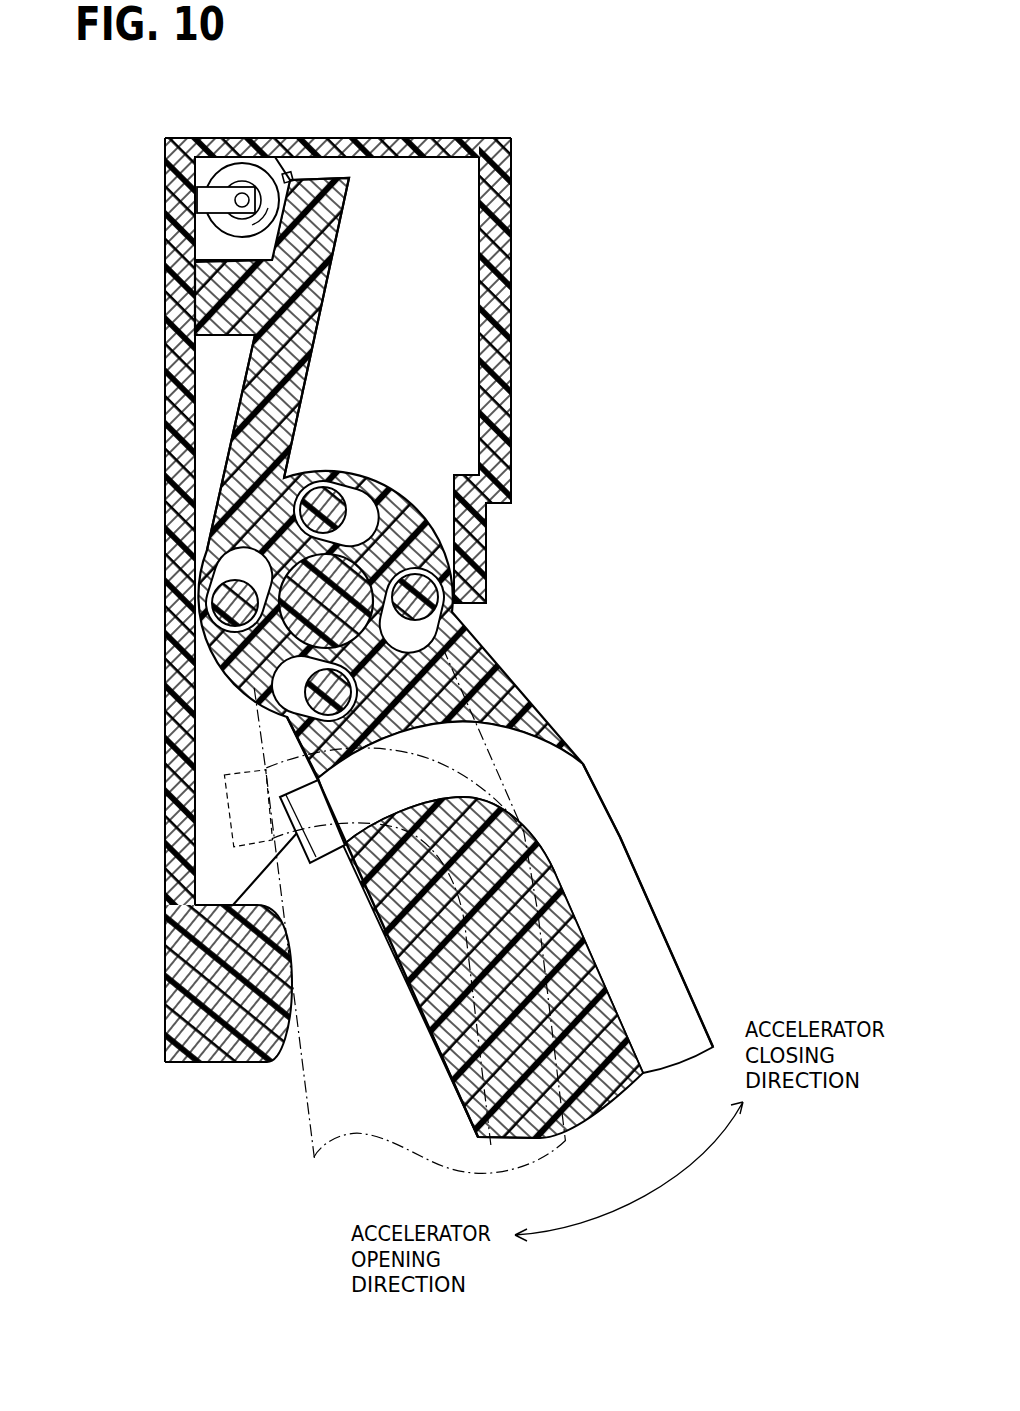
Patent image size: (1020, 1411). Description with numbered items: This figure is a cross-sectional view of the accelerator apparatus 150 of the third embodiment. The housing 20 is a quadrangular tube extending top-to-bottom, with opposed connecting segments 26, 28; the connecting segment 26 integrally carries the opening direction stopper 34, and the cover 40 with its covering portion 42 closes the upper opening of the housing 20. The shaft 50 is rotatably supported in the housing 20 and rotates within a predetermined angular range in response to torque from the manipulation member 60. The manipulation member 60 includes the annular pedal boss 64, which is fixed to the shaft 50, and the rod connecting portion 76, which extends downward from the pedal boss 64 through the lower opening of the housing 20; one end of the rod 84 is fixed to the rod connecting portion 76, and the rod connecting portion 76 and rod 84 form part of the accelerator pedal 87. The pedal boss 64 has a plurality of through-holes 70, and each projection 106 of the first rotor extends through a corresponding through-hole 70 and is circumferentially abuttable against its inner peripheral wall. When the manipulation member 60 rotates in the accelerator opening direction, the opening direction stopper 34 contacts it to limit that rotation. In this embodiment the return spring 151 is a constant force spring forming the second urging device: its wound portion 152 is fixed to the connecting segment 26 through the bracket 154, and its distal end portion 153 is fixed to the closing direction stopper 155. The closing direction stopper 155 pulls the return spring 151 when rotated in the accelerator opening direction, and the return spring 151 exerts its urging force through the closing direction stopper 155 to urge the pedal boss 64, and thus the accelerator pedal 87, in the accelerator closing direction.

The housing 20 is at (340, 593).
The connecting segment 26 is at (180, 345).
The connecting segment 28 is at (505, 396).
The opening direction stopper 34 is at (248, 1030).
The cover 40 is at (381, 128).
The covering portion 42 is at (436, 148).
The shaft 50 is at (280, 708).
The manipulation member 60 is at (417, 702).
The pedal boss 64 is at (415, 552).
The through-hole 70 is at (380, 503).
The rod connecting portion 76 is at (416, 958).
The rod 84 is at (685, 1013).
The accelerator pedal 87 is at (463, 1120).
The projection 106 is at (298, 531).
The accelerator apparatus 150 is at (221, 159).
The return spring 151 is at (245, 166).
The wound portion 152 is at (230, 166).
The distal end portion 153 is at (283, 174).
The bracket 154 is at (230, 202).
The closing direction stopper 155 is at (275, 372).